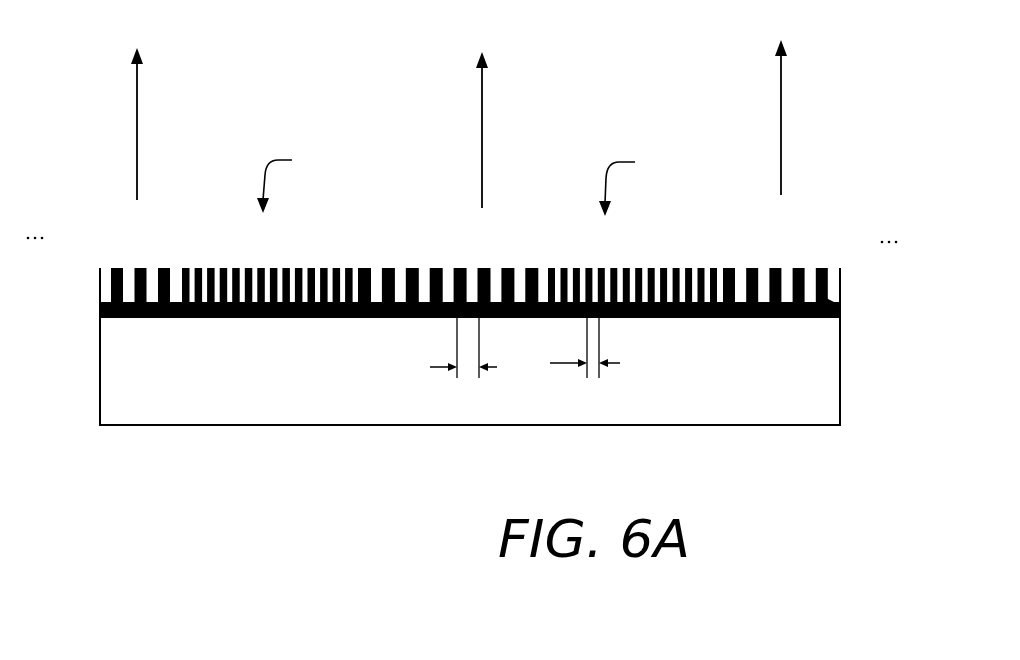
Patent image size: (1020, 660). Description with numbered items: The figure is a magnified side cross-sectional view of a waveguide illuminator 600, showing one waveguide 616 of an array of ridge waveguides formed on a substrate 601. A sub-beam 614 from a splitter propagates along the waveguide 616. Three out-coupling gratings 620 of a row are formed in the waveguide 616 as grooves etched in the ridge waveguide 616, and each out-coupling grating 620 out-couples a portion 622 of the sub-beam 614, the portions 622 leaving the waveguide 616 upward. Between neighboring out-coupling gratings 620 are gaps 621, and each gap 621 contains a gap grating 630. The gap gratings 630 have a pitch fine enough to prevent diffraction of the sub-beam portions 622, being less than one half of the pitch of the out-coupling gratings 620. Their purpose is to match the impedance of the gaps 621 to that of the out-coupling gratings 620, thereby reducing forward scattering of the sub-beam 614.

The waveguide illuminator 600 is at (409, 97).
The substrate 601 is at (763, 392).
The sub-beam 614 is at (278, 305).
The waveguide 616 is at (177, 305).
The out-coupling grating 620 is at (188, 254).
The gap 621 is at (467, 182).
The portion of sub-beam 622 is at (137, 76).
The gap grating 630 is at (193, 255).